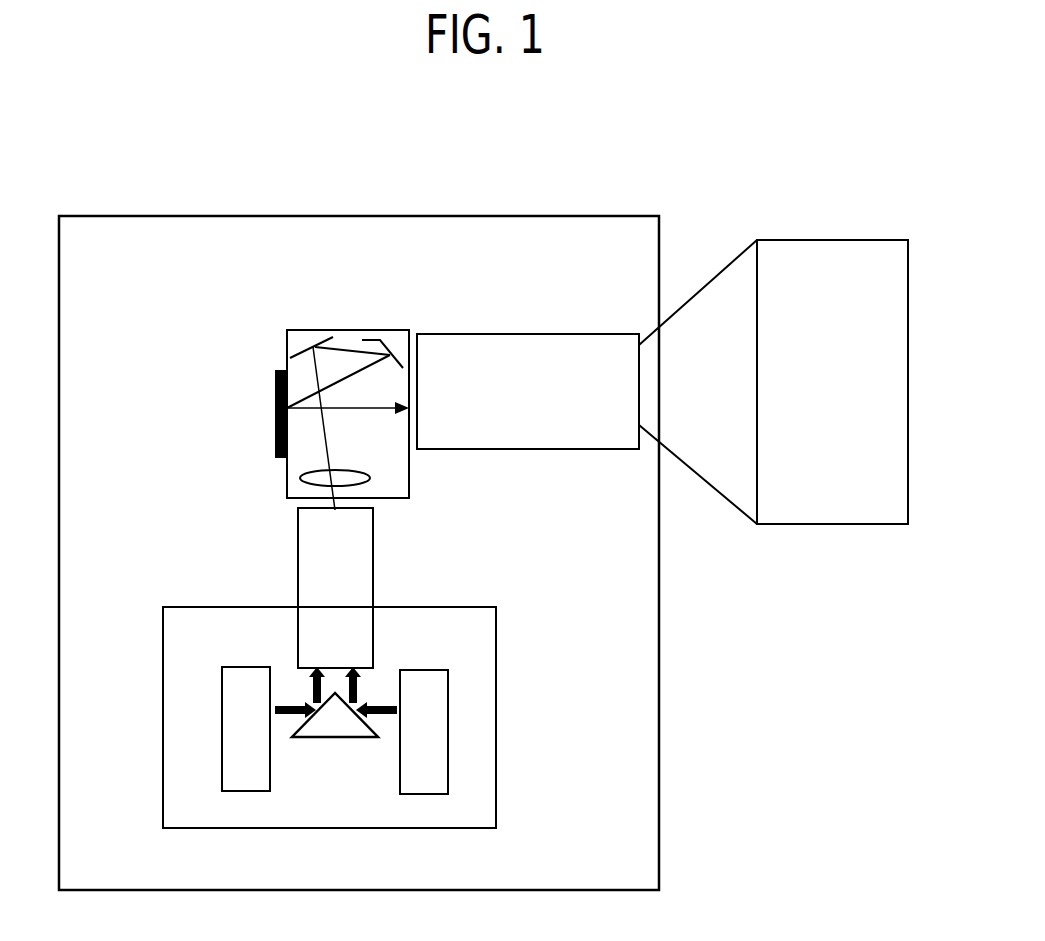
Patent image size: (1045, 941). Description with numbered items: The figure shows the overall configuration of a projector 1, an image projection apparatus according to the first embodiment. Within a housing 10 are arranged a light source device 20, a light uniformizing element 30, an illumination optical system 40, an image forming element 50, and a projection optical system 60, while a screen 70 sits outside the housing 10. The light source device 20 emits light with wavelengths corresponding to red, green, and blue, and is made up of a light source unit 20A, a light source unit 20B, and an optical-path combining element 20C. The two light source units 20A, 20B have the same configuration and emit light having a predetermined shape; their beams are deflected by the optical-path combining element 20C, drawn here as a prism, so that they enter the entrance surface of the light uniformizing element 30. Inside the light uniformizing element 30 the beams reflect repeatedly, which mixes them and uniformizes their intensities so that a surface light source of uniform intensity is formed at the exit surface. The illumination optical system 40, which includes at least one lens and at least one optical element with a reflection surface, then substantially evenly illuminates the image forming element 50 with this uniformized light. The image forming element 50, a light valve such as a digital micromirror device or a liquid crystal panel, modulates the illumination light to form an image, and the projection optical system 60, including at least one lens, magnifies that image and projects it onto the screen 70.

The projector 1 is at (763, 122).
The housing 10 is at (563, 216).
The light source device 20 is at (496, 638).
The light source unit 20A is at (425, 794).
The light source unit 20B is at (247, 791).
The optical-path combining element 20C is at (335, 738).
The light uniformizing element 30 is at (297, 534).
The illumination optical system 40 is at (365, 330).
The image forming element 50 is at (275, 375).
The projection optical system 60 is at (563, 334).
The screen 70 is at (863, 240).